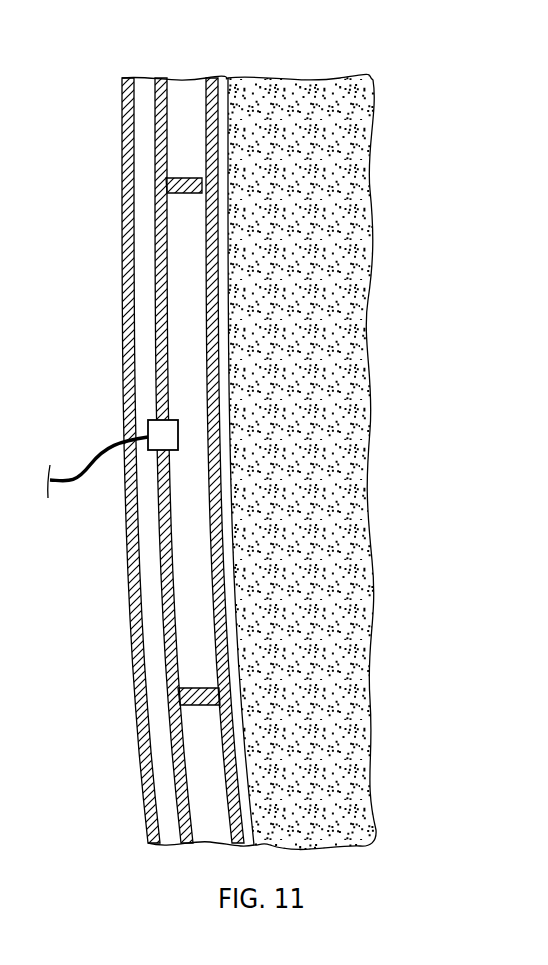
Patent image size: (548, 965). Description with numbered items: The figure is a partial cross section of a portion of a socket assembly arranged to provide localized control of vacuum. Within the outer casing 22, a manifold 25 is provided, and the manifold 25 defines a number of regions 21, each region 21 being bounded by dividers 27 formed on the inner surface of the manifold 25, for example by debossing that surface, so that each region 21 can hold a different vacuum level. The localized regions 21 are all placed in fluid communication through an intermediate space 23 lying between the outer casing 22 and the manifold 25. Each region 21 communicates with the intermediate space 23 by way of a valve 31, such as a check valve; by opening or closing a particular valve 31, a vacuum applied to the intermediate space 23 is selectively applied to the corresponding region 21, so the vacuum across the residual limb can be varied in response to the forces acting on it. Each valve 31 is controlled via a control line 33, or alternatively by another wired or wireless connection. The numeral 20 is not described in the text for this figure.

The housing wall 20 is at (205, 283).
The region 21 is at (188, 514).
The outer casing 22 is at (121, 247).
The intermediate space 23 is at (145, 379).
The manifold 25 is at (155, 157).
The divider 27 is at (185, 178).
The valve 31 is at (148, 426).
The control line 33 is at (60, 470).